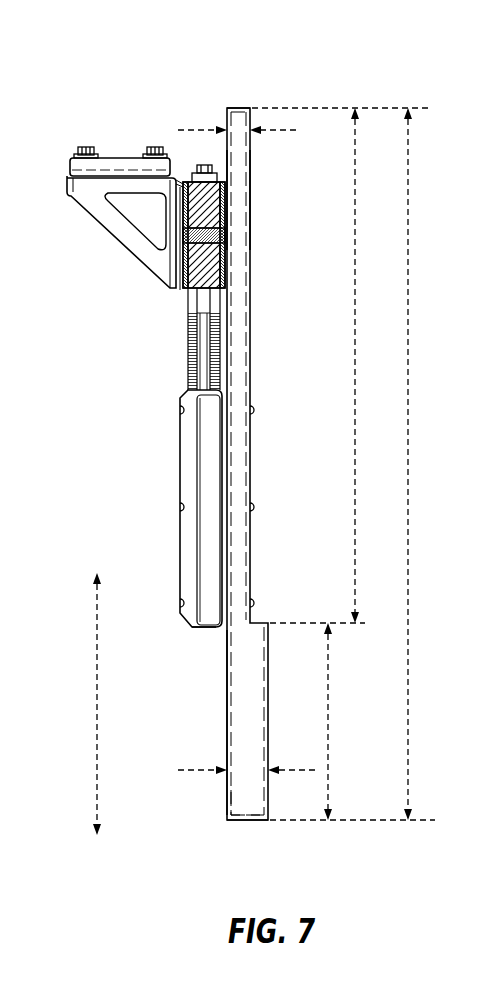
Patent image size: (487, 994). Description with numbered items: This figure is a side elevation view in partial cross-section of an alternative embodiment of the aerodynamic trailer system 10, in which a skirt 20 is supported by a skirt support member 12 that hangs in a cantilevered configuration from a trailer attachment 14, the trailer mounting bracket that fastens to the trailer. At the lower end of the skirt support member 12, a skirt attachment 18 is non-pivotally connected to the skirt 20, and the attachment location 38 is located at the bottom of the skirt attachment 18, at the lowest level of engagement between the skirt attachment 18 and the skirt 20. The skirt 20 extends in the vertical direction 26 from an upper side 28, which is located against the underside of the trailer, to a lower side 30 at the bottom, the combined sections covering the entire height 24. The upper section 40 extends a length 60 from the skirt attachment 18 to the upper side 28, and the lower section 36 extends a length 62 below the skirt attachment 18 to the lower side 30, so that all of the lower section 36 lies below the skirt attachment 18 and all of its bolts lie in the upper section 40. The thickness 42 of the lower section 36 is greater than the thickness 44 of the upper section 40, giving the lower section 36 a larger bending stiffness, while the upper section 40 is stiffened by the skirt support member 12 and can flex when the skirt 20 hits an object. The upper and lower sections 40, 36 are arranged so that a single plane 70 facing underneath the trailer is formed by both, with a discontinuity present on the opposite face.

The aerodynamic trailer system 10 is at (366, 72).
The skirt support member 12 is at (118, 232).
The trailer attachment 14 is at (118, 162).
The skirt attachment 18 is at (181, 478).
The skirt 20 is at (247, 323).
The height 24 is at (409, 455).
The vertical direction 26 is at (96, 705).
The upper side 28 is at (238, 100).
The lower side 30 is at (253, 826).
The lower section 36 is at (235, 802).
The attachment location 38 is at (213, 632).
The upper section 40 is at (245, 194).
The thickness 42 is at (190, 777).
The thickness 44 is at (205, 128).
The length 60 is at (354, 365).
The length 62 is at (330, 722).
The single plane 70 is at (222, 690).